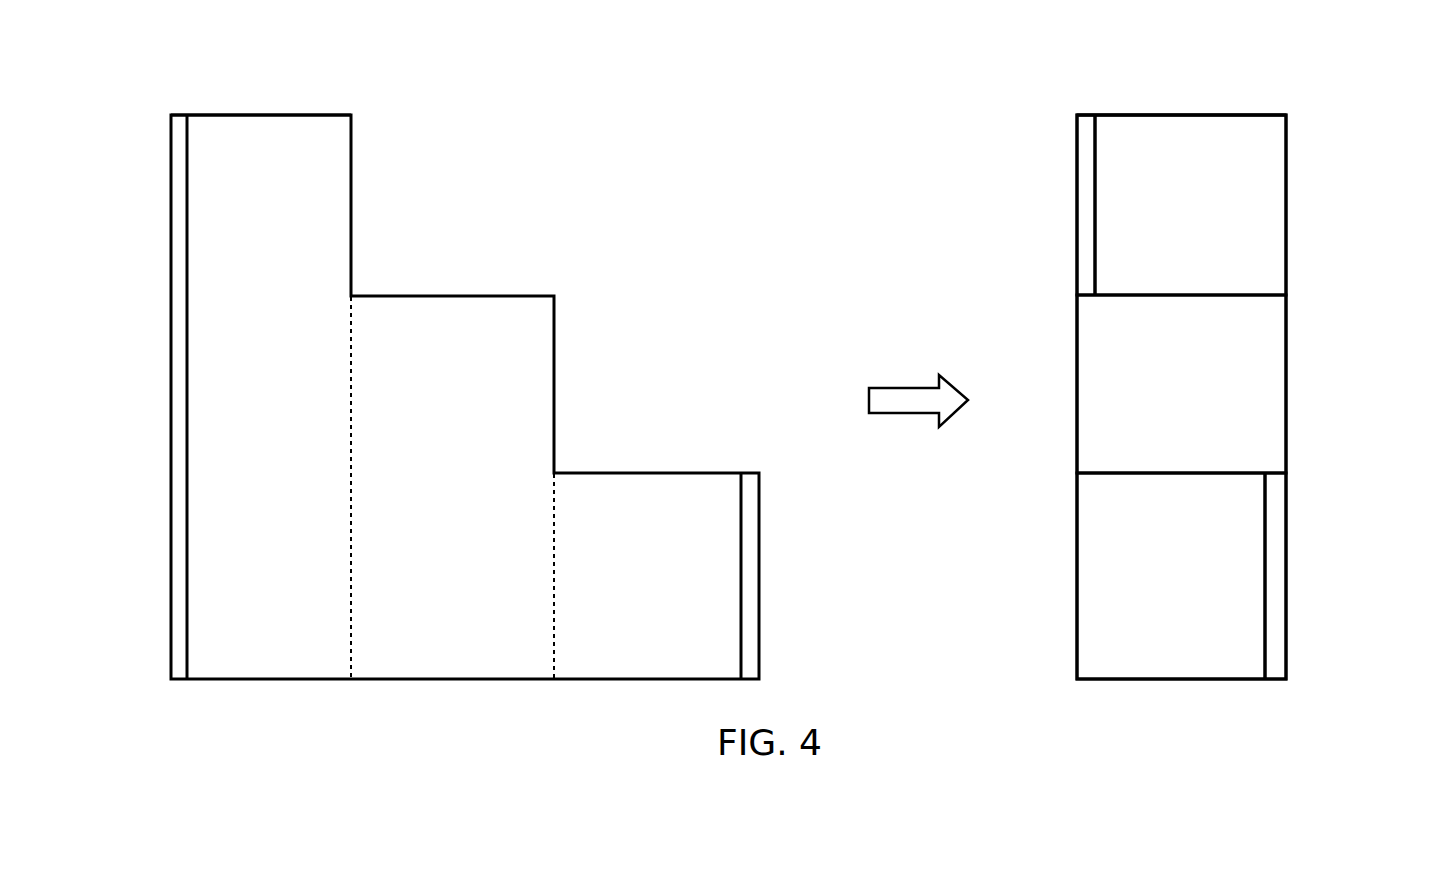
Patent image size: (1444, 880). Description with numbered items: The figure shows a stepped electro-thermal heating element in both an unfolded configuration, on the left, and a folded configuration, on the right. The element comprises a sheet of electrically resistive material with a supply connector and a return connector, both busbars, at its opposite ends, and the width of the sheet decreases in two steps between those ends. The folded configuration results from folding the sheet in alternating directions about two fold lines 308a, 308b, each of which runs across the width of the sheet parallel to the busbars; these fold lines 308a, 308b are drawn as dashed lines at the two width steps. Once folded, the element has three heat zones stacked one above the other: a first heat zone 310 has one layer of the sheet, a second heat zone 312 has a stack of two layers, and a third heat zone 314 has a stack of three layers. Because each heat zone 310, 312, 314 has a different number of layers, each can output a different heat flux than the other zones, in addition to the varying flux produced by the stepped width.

The fold line 308a is at (349, 632).
The fold line 308b is at (553, 632).
The first heat zone 310 is at (1207, 212).
The second heat zone 312 is at (1207, 395).
The third heat zone 314 is at (1207, 593).